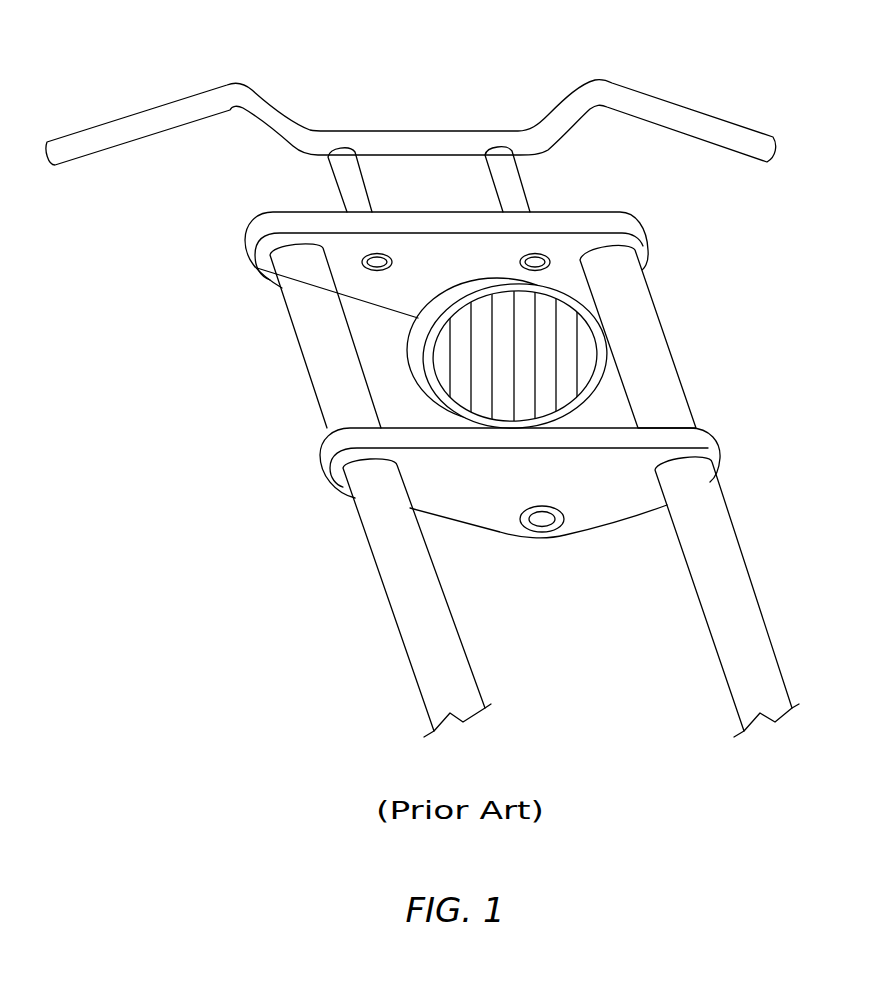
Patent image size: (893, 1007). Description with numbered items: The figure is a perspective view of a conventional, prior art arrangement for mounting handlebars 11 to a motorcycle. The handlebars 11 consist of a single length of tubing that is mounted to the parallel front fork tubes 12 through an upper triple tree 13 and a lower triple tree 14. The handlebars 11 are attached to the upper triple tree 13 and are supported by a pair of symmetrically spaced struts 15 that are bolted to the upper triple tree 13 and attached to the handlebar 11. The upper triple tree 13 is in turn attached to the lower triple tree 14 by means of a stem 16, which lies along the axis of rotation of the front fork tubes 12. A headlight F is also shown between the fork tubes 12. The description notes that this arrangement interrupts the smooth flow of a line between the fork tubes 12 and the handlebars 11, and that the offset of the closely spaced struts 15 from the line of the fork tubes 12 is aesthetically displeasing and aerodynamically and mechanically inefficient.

The handlebars 11 is at (424, 84).
The front fork tubes 12 is at (512, 490).
The upper triple tree 13 is at (438, 247).
The lower triple tree 14 is at (497, 502).
The struts 15 is at (422, 173).
The stem 16 is at (512, 560).
The headlight F is at (384, 340).